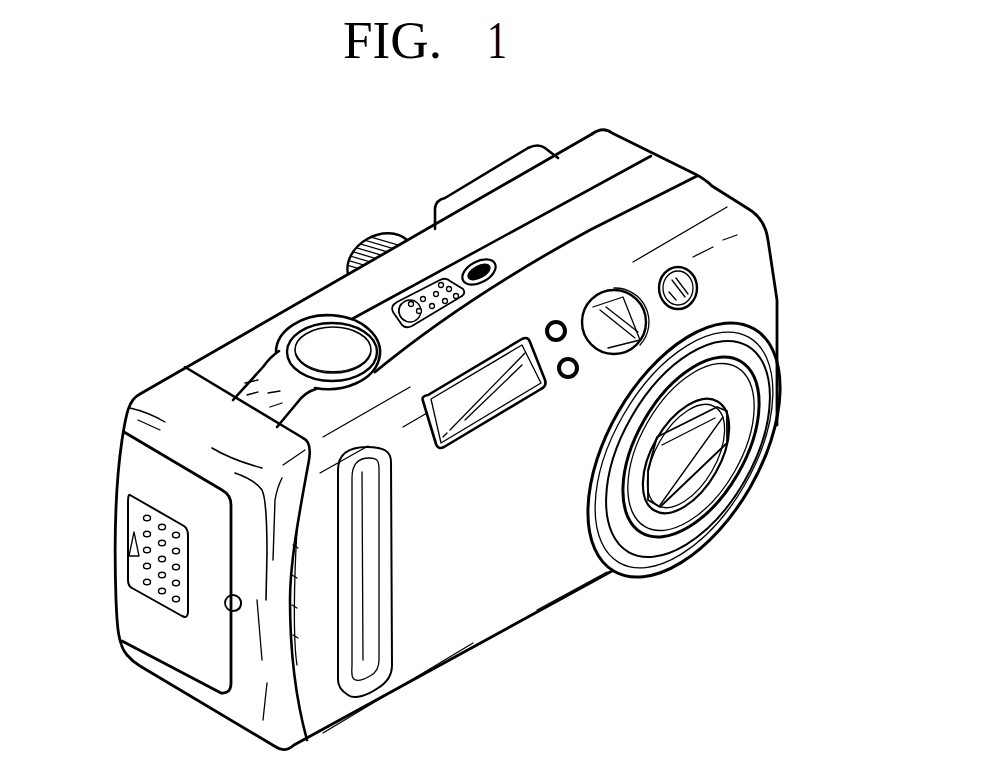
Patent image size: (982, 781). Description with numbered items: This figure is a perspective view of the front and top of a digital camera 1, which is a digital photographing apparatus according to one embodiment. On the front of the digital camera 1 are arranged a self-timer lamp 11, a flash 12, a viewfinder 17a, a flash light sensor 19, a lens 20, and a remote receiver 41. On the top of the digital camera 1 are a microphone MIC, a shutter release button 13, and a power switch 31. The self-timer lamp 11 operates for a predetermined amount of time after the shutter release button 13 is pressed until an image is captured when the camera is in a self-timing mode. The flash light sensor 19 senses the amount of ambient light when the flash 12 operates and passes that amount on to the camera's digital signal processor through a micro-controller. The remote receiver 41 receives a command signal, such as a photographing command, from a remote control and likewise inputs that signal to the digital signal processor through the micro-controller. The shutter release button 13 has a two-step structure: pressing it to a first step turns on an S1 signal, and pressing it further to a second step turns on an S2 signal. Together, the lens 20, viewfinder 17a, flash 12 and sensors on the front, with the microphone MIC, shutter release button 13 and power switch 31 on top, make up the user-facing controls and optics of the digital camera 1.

The digital camera 1 is at (150, 270).
The self-timer lamp 11 is at (678, 298).
The flash 12 is at (463, 400).
The shutter release button 13 is at (330, 347).
The viewfinder 17a is at (613, 297).
The flash light sensor (FS) 19 is at (567, 331).
The lens 20 is at (688, 458).
The power switch 31 is at (385, 246).
The remote receiver 41 is at (579, 368).
The microphone MIC is at (477, 270).